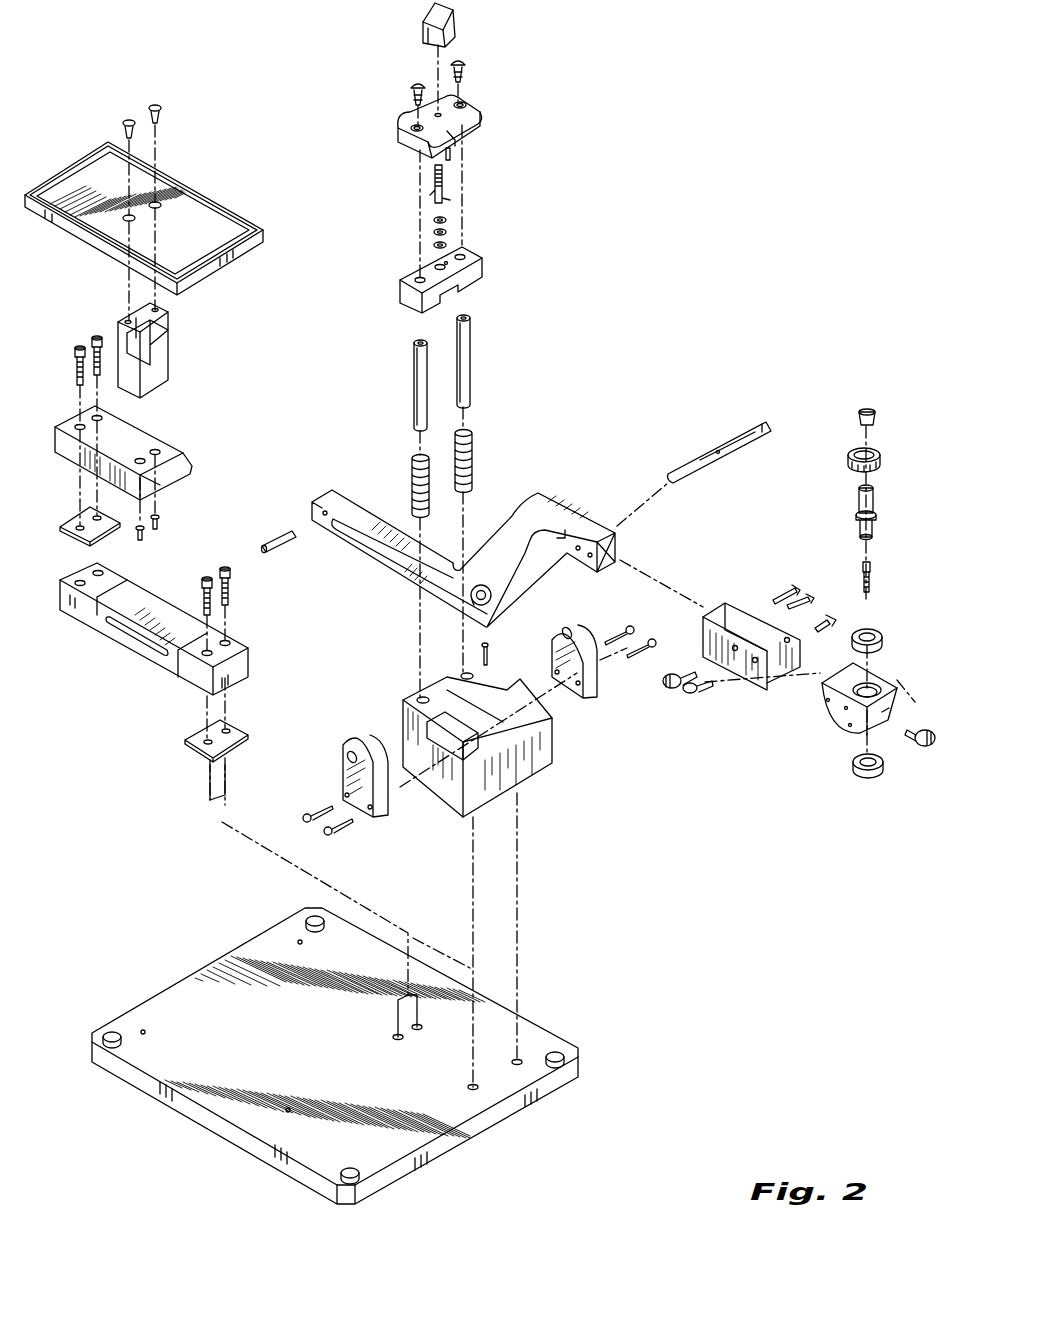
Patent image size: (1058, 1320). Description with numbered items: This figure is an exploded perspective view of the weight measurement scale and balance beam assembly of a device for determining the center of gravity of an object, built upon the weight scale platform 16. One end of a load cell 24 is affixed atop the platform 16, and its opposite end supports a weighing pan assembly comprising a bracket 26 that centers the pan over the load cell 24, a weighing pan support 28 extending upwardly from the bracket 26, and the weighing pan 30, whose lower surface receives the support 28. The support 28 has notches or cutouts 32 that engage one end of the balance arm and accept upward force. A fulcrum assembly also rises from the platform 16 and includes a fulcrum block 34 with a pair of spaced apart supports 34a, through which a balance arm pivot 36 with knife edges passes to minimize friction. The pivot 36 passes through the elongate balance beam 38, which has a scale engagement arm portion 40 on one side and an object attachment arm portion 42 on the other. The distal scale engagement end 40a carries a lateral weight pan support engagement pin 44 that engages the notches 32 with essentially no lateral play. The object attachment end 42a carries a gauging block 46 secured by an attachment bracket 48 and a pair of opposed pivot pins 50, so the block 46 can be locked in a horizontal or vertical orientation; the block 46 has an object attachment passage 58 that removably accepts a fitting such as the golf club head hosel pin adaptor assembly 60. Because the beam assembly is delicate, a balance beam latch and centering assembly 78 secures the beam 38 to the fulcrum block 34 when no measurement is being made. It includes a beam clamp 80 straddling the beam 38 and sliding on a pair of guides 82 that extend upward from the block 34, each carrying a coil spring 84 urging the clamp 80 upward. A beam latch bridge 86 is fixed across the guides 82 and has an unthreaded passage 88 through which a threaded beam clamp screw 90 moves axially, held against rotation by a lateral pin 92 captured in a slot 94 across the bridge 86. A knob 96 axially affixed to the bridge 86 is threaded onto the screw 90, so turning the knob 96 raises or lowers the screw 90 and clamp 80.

The weight scale platform 16 is at (335, 1042).
The load cell 24 is at (140, 655).
The bracket 26 is at (178, 448).
The weighing pan support 28 is at (176, 346).
The weighing pan 30 is at (205, 249).
The notches or cutouts 32 is at (162, 326).
The fulcrum block 34 is at (528, 778).
The fulcrum supports 34a is at (362, 740).
The balance arm pivot 36 is at (735, 445).
The balance beam 38 is at (483, 584).
The scale engagement arm portion 40 is at (365, 558).
The distal scale engagement end 40a is at (318, 502).
The object attachment arm portion 42 is at (578, 524).
The object attachment end 42a is at (588, 535).
The weight pan support engagement pin 44 is at (262, 542).
The gauging block 46 is at (841, 731).
The attachment bracket 48 is at (735, 608).
The pivot pins 50 is at (705, 692).
The object attachment passage 58 is at (877, 682).
The golf club head hosel pin adaptor assembly 60 is at (855, 375).
The balance beam latch and centering assembly 78 is at (548, 273).
The beam clamp 80 is at (400, 277).
The guides 82 is at (457, 376).
The coil spring 84 is at (455, 486).
The beam latch bridge 86 is at (478, 115).
The unthreaded passage 88 is at (436, 267).
The beam clamp screw 90 is at (434, 182).
The lateral pin 92 is at (452, 203).
The slot 94 is at (452, 145).
The knob 96 is at (456, 12).